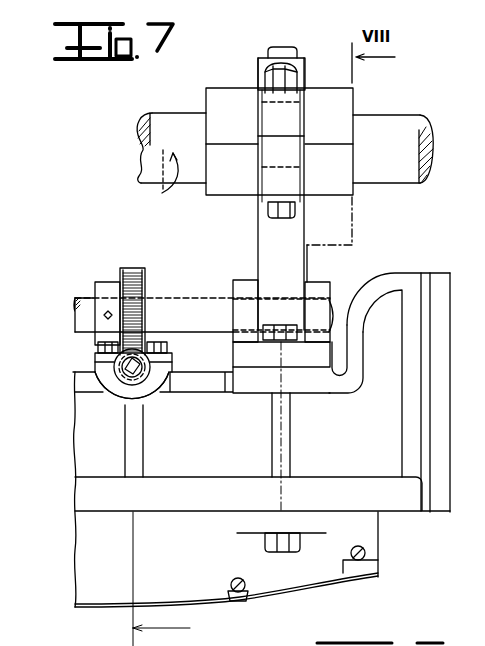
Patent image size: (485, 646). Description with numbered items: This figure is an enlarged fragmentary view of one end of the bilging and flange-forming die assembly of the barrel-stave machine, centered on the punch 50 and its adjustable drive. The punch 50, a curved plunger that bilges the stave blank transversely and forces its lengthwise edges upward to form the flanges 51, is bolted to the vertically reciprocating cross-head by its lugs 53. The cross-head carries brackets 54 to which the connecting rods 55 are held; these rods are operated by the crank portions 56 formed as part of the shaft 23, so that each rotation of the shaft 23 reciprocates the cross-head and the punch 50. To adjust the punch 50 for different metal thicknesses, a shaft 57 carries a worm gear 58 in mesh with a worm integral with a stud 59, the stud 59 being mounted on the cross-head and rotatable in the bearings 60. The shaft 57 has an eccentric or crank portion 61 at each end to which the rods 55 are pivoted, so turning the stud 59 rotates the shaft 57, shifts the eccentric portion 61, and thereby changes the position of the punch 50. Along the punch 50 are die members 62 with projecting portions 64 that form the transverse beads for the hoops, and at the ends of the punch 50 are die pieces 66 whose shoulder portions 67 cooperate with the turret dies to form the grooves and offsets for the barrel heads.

The shaft 23 is at (378, 135).
The punch 50 is at (358, 540).
The flanges 51 is at (353, 447).
The lugs 53 is at (292, 527).
The brackets 54 is at (307, 352).
The connecting rods 55 is at (270, 228).
The crank portions 56 is at (263, 108).
The shaft 57 is at (185, 312).
The worm gear 58 is at (128, 268).
The stud 59 is at (146, 384).
The bearings 60 is at (110, 393).
The eccentric or crank portion 61 is at (271, 300).
The die members 62 is at (243, 604).
The projecting portions 64 is at (178, 579).
The die pieces 66 is at (355, 568).
The shoulder portions 67 is at (378, 573).